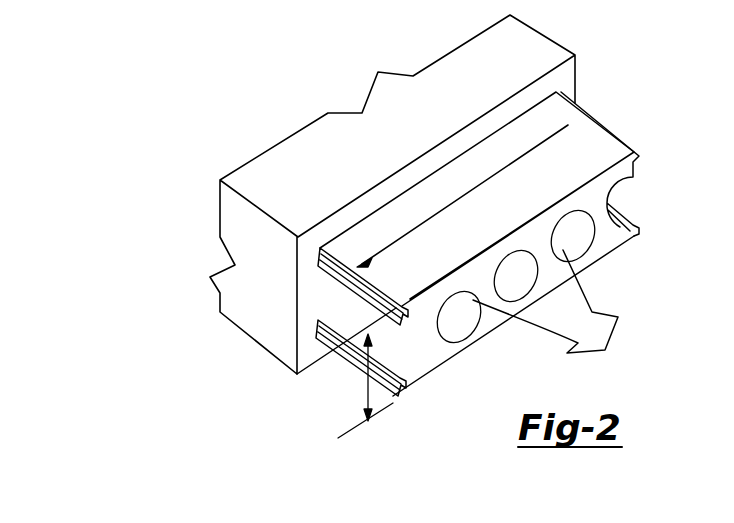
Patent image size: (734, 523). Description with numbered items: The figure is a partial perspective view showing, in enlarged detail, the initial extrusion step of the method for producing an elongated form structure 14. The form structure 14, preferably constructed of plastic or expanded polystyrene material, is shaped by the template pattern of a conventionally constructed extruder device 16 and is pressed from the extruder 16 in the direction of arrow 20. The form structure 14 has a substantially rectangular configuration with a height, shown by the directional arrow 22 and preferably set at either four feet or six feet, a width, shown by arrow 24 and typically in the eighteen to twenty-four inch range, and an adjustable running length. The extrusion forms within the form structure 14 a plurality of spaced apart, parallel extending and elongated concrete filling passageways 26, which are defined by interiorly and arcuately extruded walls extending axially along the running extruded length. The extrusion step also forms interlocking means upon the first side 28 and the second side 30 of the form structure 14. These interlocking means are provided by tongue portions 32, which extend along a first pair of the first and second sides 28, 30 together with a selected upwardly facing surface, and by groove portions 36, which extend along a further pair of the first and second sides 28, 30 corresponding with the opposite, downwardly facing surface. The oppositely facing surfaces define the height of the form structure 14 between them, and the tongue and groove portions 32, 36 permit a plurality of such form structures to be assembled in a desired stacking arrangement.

The form structure 14 is at (428, 376).
The extruder device 16 is at (240, 241).
The arrow 20 is at (592, 312).
The directional arrow 22 is at (469, 186).
The arrow 24 is at (367, 384).
The concrete filling passageways 26 is at (548, 247).
The first side 28 is at (655, 237).
The second side 30 is at (628, 103).
The tongue portions 32 is at (638, 156).
The groove portions 36 is at (320, 256).